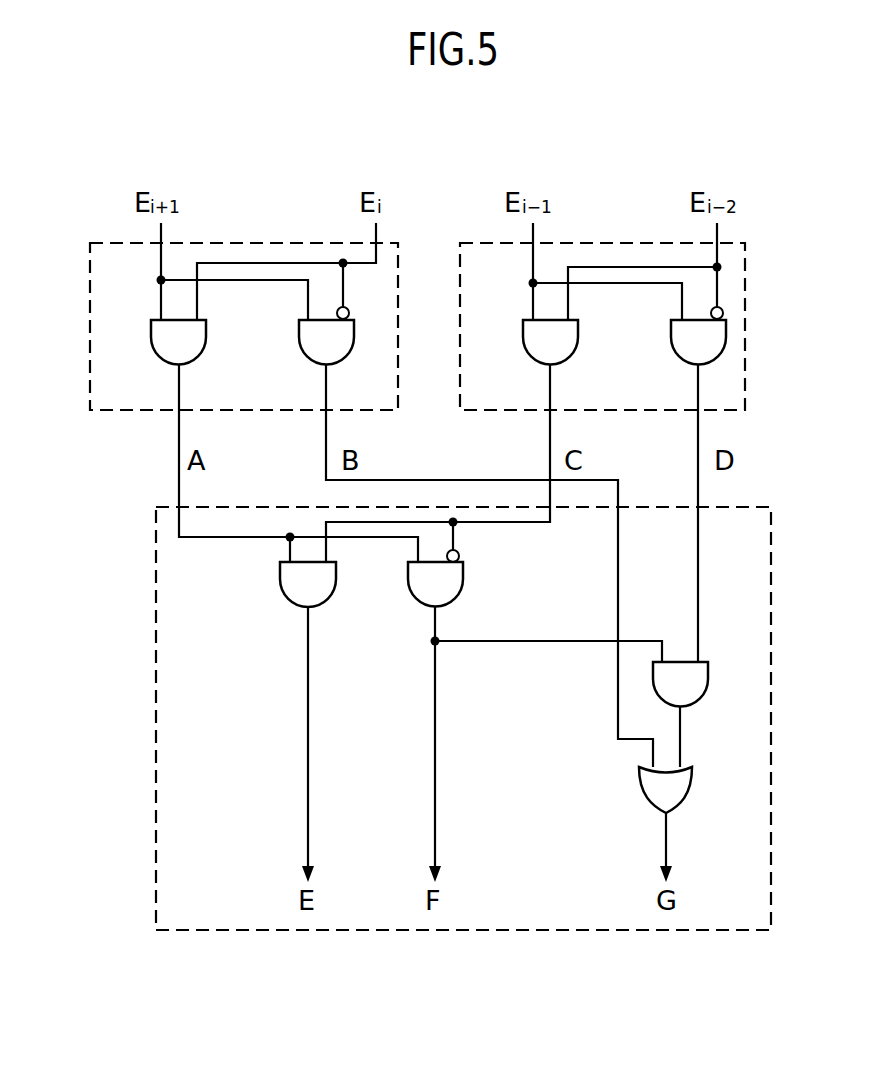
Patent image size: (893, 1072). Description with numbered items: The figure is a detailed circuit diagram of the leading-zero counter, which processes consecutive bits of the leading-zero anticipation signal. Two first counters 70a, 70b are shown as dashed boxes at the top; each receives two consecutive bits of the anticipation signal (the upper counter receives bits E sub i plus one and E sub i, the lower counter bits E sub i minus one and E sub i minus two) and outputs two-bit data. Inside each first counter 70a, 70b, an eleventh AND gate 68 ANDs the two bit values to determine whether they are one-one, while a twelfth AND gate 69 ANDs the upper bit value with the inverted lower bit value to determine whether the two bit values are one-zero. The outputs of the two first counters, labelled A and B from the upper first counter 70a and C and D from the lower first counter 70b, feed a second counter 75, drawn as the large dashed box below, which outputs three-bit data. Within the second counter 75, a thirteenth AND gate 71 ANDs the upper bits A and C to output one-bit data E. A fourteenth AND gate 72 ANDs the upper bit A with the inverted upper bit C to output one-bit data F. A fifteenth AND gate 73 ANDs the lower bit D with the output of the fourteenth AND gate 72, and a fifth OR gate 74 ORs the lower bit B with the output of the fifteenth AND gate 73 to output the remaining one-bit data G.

The eleventh AND gate 68 is at (155, 358).
The twelfth AND gate 69 is at (302, 358).
The first counter 70a is at (87, 316).
The first counter 70b is at (745, 333).
The thirteenth AND gate 71 is at (284, 598).
The fourteenth AND gate 72 is at (412, 598).
The fifteenth AND gate 73 is at (695, 703).
The fifth OR gate 74 is at (642, 790).
The second counter 75 is at (151, 699).